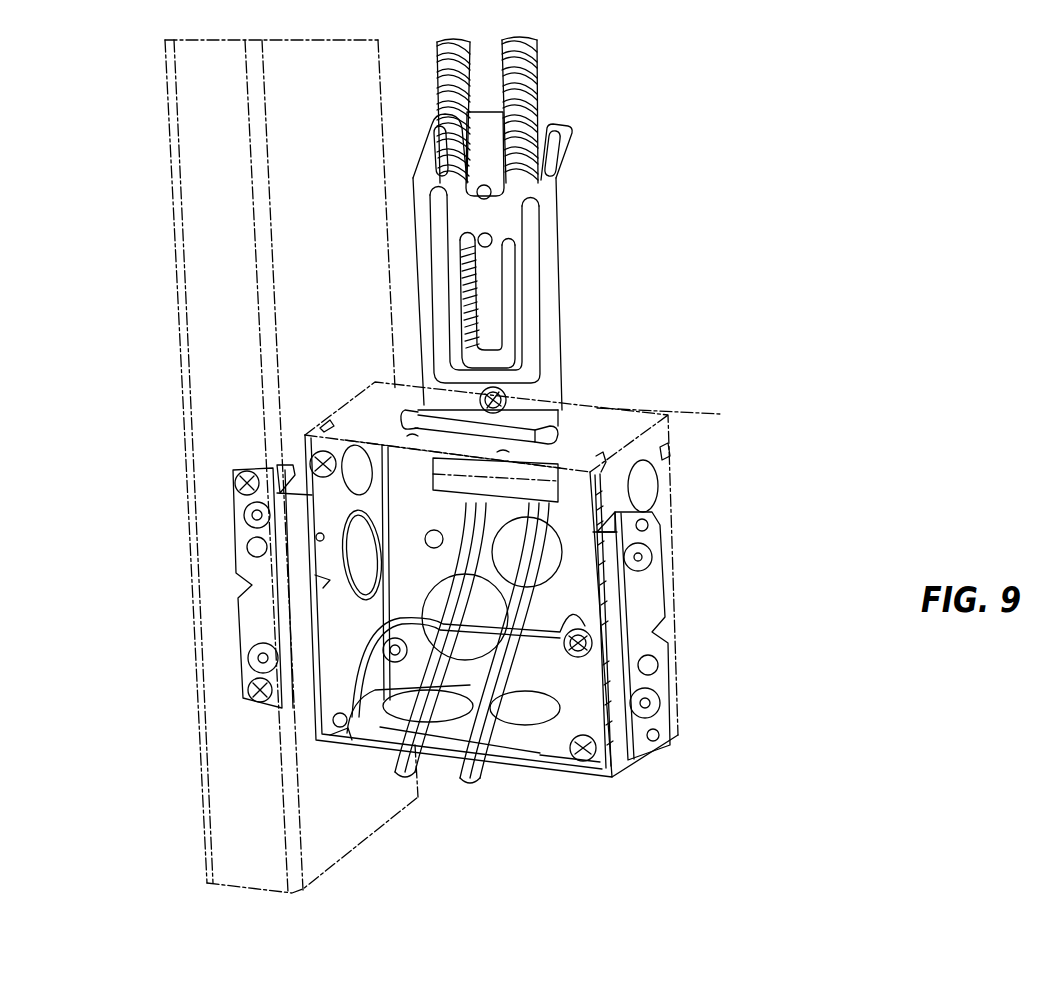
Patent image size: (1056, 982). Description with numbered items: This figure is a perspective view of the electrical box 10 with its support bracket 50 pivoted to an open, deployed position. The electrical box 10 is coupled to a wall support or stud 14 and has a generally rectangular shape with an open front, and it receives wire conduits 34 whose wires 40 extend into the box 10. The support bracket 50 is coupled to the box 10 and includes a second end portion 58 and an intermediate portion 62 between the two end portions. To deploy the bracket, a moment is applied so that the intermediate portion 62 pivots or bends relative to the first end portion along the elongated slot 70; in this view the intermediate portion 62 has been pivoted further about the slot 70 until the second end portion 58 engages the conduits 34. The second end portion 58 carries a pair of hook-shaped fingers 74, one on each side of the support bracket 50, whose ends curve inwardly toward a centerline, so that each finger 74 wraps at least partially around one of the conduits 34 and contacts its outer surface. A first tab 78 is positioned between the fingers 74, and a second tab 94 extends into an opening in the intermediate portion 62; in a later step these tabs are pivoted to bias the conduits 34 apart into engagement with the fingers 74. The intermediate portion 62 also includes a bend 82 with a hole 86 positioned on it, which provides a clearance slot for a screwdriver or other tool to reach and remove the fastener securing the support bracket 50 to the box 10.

The electrical box 10 is at (486, 606).
The stud 14 is at (198, 196).
The conduits 34 is at (433, 63).
The wires 40 is at (487, 688).
The support bracket 50 is at (523, 234).
The second end portion 58 is at (523, 129).
The intermediate portion 62 is at (552, 350).
The elongated slot 70 is at (484, 380).
The hook-shaped fingers 74 is at (436, 143).
The first tab 78 is at (482, 127).
The bend 82 is at (550, 416).
The hole 86 is at (432, 397).
The second tab 94 is at (492, 293).